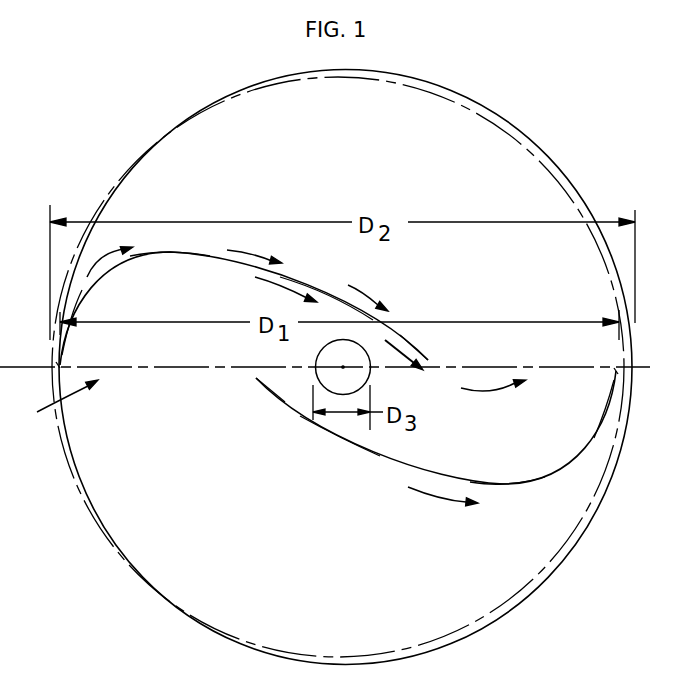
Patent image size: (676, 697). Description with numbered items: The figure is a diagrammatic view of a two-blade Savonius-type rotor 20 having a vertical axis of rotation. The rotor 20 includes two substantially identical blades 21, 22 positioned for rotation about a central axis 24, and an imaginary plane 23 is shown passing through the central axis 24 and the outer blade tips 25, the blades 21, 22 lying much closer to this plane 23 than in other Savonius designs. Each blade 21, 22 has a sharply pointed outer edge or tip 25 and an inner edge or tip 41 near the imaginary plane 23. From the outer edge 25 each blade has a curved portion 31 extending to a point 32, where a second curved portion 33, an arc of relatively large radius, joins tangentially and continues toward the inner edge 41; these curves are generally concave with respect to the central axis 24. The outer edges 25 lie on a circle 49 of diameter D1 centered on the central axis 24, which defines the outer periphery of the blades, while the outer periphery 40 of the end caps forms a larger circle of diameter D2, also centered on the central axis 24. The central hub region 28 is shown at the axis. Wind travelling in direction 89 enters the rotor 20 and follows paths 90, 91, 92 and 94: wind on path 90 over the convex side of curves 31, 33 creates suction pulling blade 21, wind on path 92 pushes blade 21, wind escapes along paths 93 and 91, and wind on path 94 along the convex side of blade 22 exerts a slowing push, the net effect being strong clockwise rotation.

The Savonius-type rotor 20 is at (110, 617).
The blade 21 is at (195, 257).
The blade 22 is at (374, 452).
The imaginary plane 23 is at (158, 370).
The central axis 24 is at (343, 367).
The outer edge or tip 25 is at (54, 365).
The shaft 28 is at (319, 353).
The curved portion 31 is at (82, 290).
The point 32 is at (168, 253).
The second curved portion 33 is at (317, 290).
The outer periphery 40 is at (489, 112).
The inner edge or tip 41 is at (428, 360).
The circle 49 is at (217, 108).
The wind direction 89 is at (45, 413).
The wind path 90 is at (95, 268).
The wind path 91 is at (480, 392).
The wind path 92 is at (268, 283).
The wind path 93 is at (390, 344).
The wind path 94 is at (441, 497).